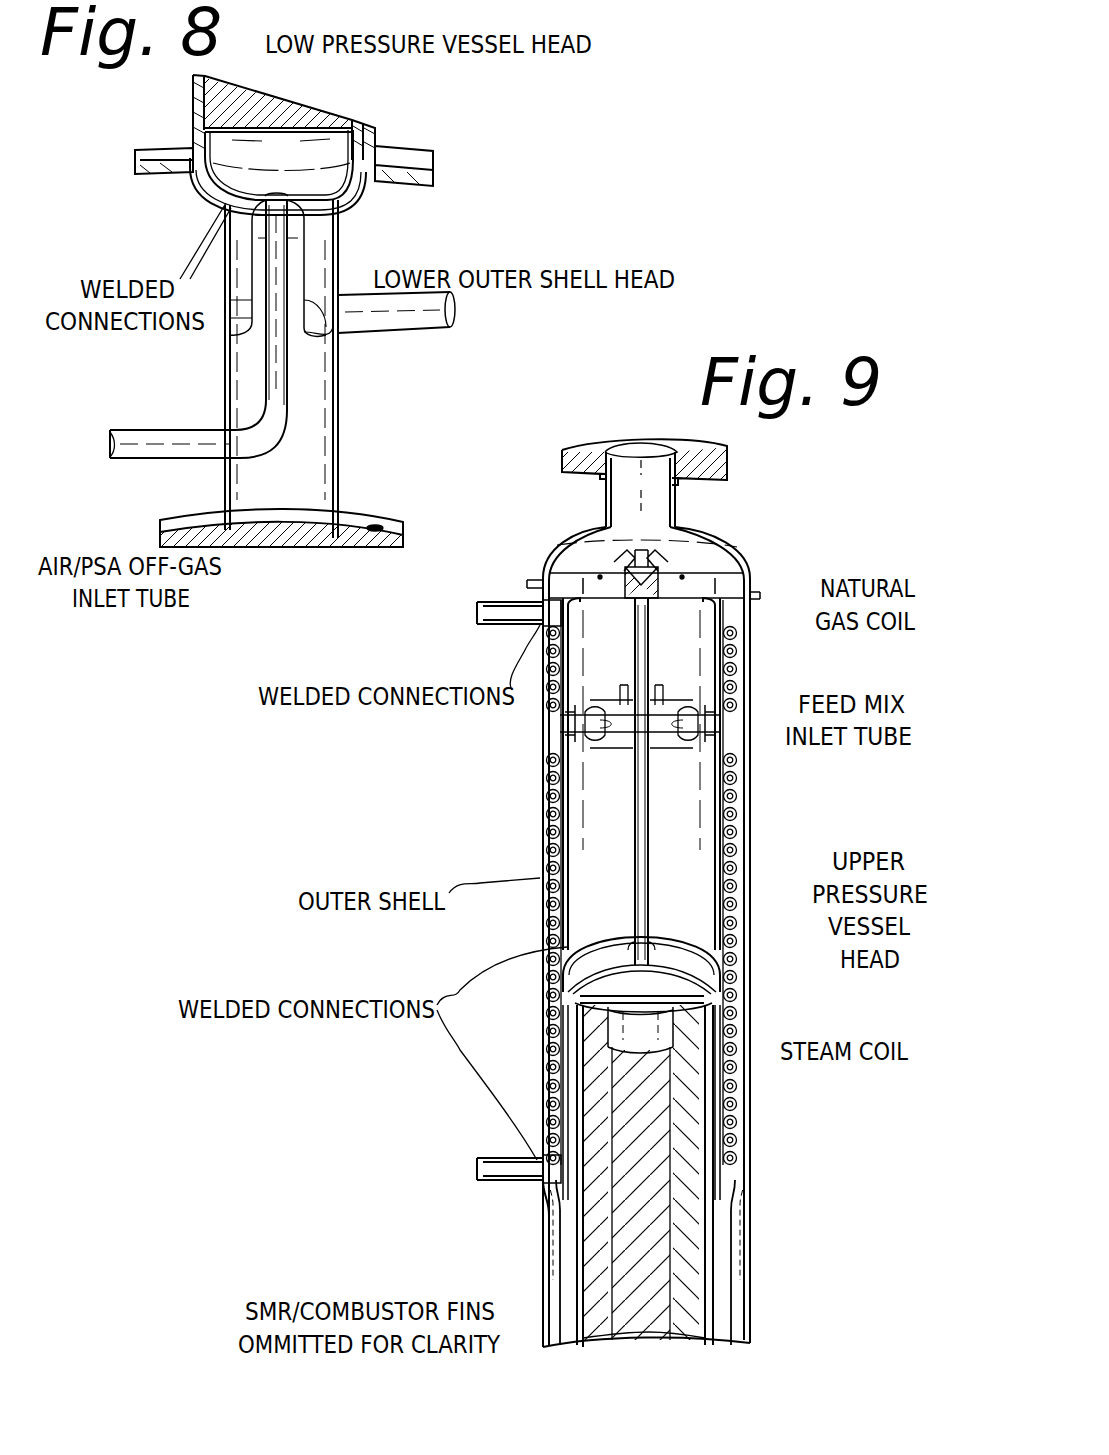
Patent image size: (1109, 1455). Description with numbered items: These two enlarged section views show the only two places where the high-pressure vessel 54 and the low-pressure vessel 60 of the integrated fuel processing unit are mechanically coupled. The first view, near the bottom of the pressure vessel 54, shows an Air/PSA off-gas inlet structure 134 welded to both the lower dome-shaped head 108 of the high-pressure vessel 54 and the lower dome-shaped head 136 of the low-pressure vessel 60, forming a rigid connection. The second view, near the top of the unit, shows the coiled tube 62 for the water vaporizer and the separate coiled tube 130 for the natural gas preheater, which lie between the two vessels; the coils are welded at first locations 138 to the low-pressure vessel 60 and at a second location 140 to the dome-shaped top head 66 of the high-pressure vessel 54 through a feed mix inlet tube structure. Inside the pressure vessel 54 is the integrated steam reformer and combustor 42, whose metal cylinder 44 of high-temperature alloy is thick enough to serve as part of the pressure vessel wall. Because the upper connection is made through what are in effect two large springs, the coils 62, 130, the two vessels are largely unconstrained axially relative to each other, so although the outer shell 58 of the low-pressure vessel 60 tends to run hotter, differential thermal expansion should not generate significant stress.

In FIG. 8, the lower dome-shaped head 108 is at (283, 155).
In FIG. 8, the high-pressure vessel 54 is at (375, 155).
In FIG. 9, the high-pressure vessel 54 is at (740, 1258).
In FIG. 8, the low-pressure vessel 60 is at (364, 200).
In FIG. 9, the low-pressure vessel 60 is at (743, 1170).
In FIG. 8, the lower dome-shaped head 136 is at (360, 210).
In FIG. 8, the Air/PSA off-gas inlet structure 134 is at (225, 373).
In FIG. 9, the first locations 138 is at (540, 605).
In FIG. 9, the coiled tube 130 is at (745, 665).
In FIG. 9, the integrated steam reformer and combustor 42 is at (655, 785).
In FIG. 9, the second location 140 is at (660, 947).
In FIG. 9, the top domed head 66 is at (743, 960).
In FIG. 9, the coiled tube 62 is at (743, 1073).
In FIG. 9, the outer shell 58 is at (745, 1205).
In FIG. 9, the metal cylinder 44 is at (745, 1295).